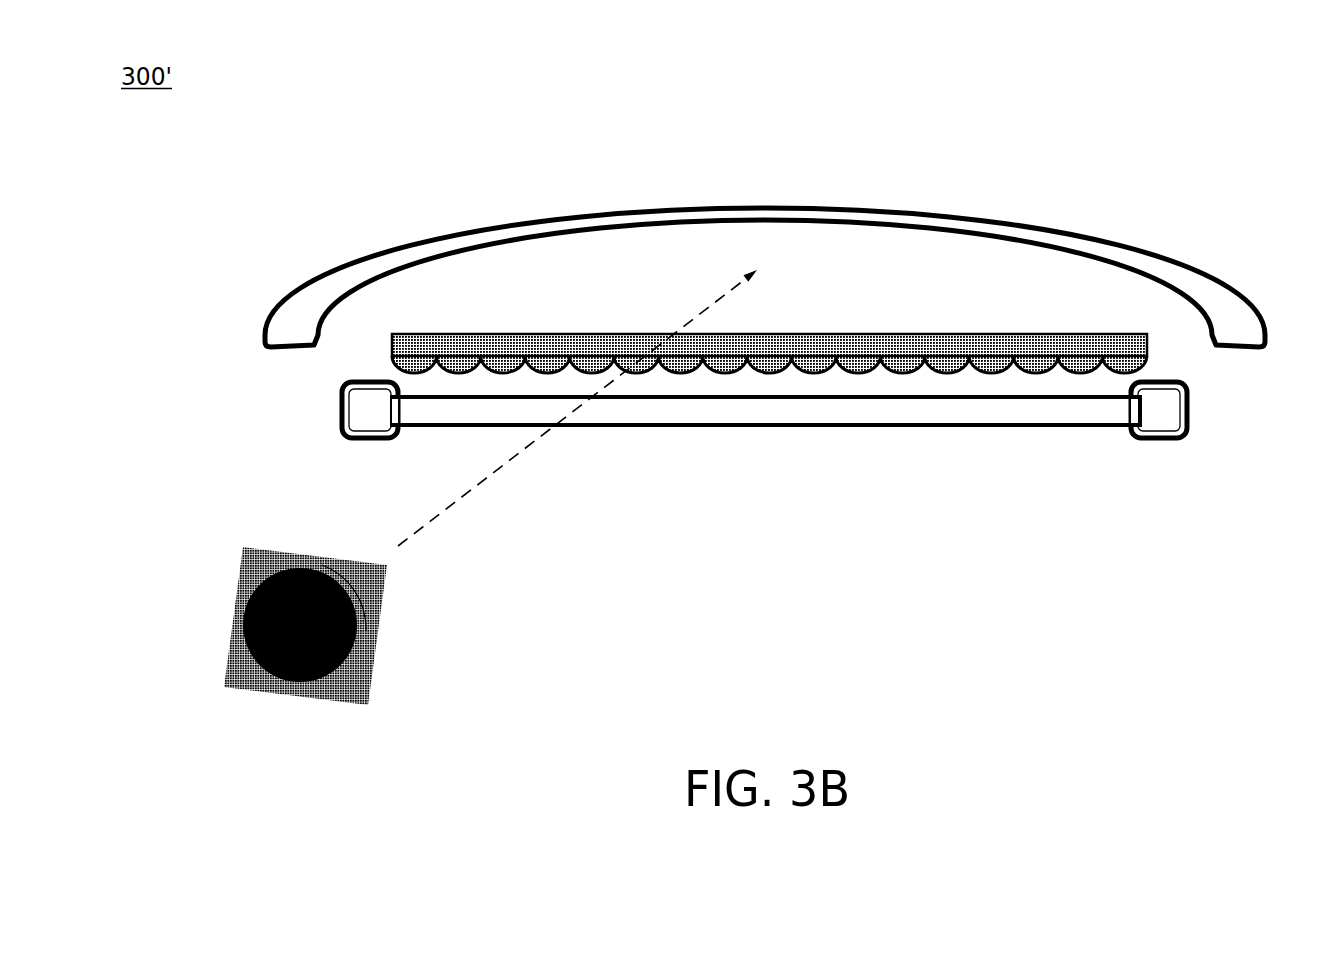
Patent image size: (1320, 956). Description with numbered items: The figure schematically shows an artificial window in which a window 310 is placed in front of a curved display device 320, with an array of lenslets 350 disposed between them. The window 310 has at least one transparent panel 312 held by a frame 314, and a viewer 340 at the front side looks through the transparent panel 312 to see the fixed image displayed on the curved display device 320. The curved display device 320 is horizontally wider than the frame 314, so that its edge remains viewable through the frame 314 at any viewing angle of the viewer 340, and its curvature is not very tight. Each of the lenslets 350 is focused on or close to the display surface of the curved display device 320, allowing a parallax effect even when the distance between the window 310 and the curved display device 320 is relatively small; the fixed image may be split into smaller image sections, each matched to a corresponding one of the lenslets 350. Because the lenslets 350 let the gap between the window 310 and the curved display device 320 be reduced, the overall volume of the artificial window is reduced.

The window 310 is at (813, 470).
The transparent panel 312 is at (955, 430).
The frame 314 is at (1178, 440).
The curved display device 320 is at (1105, 232).
The viewer 340 is at (260, 577).
The lenslets 350 is at (913, 334).